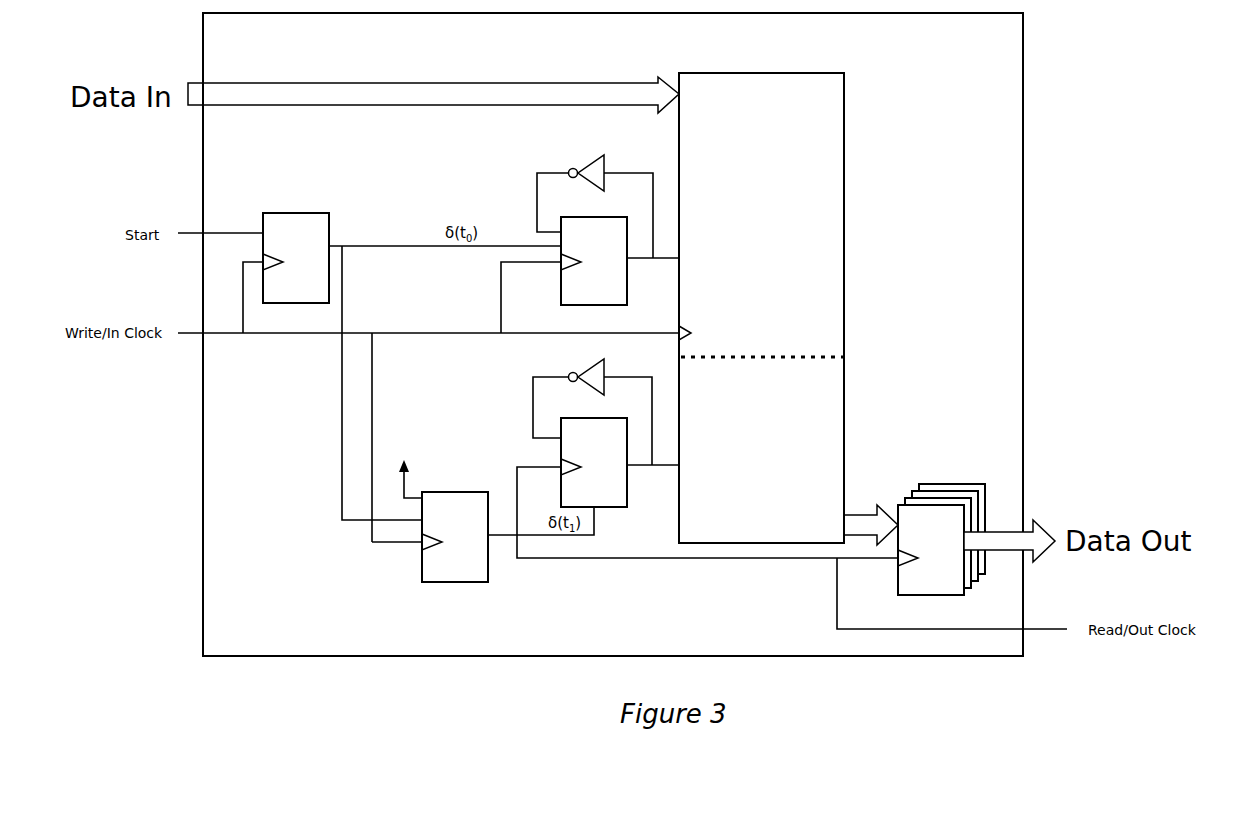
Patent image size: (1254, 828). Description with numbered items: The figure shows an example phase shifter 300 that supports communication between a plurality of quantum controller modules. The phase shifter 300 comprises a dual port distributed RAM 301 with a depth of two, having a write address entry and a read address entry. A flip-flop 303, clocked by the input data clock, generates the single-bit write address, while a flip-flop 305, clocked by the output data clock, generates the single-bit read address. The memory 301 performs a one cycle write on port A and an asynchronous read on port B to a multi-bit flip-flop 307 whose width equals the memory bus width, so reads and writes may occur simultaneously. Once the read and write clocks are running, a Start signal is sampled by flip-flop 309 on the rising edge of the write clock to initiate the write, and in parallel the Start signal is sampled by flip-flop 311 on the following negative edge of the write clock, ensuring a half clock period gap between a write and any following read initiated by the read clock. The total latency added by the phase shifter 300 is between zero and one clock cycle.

The phase shifter 300 is at (613, 334).
The dual port distributed RAM 301 is at (761, 308).
The flip-flop 303 is at (608, 230).
The flip-flop 305 is at (606, 433).
The multi-bit flip-flop 307 is at (941, 539).
The flip-flop 309 is at (296, 258).
The flip-flop 311 is at (441, 512).